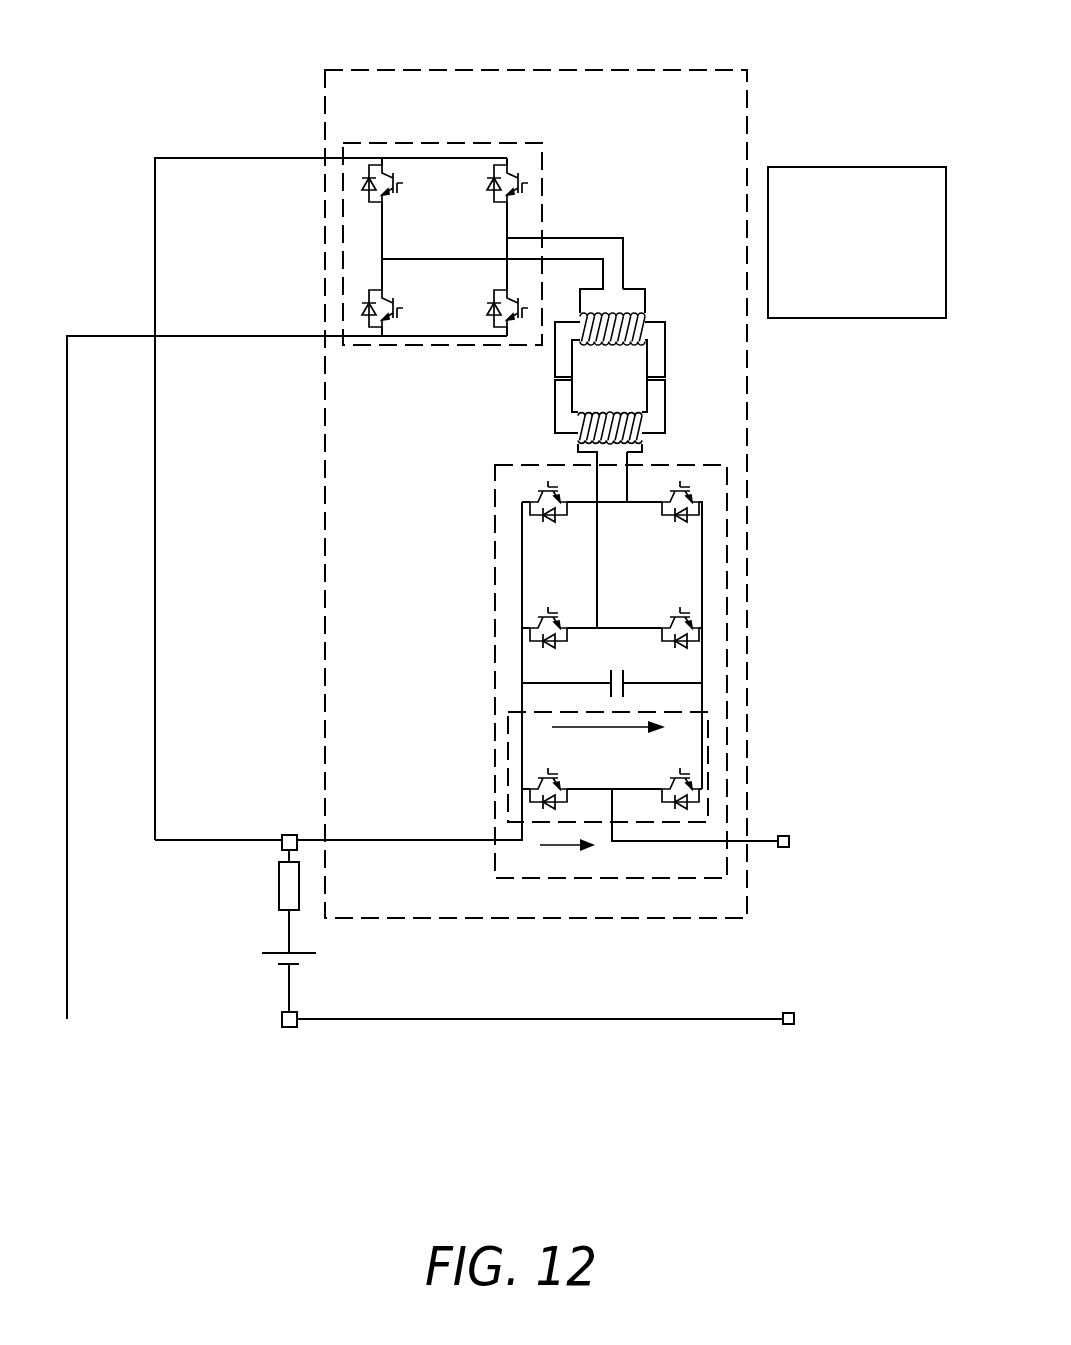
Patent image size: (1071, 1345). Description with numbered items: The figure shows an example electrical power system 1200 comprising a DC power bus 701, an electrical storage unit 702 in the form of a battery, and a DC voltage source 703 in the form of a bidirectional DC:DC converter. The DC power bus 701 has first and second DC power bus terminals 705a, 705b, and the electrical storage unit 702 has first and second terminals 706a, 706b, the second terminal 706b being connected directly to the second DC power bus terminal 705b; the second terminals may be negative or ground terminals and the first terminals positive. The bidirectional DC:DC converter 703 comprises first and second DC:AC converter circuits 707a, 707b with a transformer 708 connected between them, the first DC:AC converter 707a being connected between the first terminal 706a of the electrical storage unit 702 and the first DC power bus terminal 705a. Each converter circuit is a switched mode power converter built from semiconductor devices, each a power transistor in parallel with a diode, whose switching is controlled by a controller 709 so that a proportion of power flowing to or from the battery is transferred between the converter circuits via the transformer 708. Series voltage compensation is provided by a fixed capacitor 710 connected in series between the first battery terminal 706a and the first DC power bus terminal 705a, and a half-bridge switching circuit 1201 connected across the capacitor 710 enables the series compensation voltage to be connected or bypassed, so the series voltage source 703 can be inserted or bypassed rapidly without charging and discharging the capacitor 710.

The electrical power system 1200 is at (203, 47).
The DC voltage source 703 is at (746, 103).
The second DC:AC converter circuit 707b is at (487, 143).
The transformer 708 is at (555, 360).
The controller 709 is at (877, 259).
The first DC:AC converter circuit 707a is at (495, 513).
The capacitor 710 is at (609, 676).
The half-bridge switching circuit 1201 is at (708, 745).
The first terminal of the electrical storage unit 706a is at (282, 843).
The electrical storage unit 702 is at (304, 953).
The second terminal of the electrical storage unit 706b is at (284, 1014).
The first DC power bus terminal 705a is at (784, 848).
The second DC power bus terminal 705b is at (788, 1025).
The DC power bus 701 is at (817, 1040).